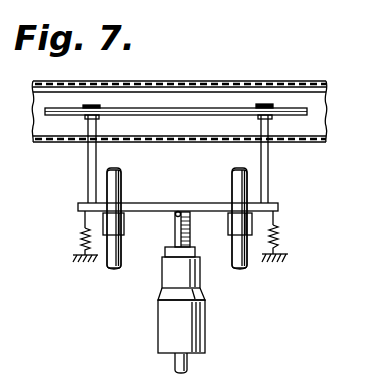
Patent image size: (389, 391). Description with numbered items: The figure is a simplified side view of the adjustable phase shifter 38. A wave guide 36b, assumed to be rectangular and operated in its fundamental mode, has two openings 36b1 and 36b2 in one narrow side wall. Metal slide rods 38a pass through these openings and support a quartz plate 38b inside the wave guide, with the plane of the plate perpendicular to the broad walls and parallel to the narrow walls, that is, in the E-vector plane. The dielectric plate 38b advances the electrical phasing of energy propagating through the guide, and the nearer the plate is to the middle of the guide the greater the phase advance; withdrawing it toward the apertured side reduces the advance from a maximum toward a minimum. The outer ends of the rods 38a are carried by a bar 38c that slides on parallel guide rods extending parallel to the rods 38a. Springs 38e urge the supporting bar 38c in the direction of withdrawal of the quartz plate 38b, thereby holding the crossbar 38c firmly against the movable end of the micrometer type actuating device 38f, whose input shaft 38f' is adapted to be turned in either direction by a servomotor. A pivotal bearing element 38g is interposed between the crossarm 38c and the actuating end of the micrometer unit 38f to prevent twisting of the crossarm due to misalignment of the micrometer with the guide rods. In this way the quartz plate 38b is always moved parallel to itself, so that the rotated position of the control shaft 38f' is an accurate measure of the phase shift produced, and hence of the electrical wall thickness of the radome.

The phase shifter 38 is at (180, 66).
The wave guide 36b is at (221, 81).
The opening 36b1 is at (268, 150).
The opening 36b2 is at (84, 148).
The metal slide rods 38a is at (268, 178).
The quartz plate 38b is at (287, 108).
The bar 38c is at (280, 207).
The springs 38e is at (81, 246).
The micrometer type actuating device 38f is at (211, 305).
The input shaft 38f' is at (212, 361).
The pivotal bearing element 38g is at (175, 216).